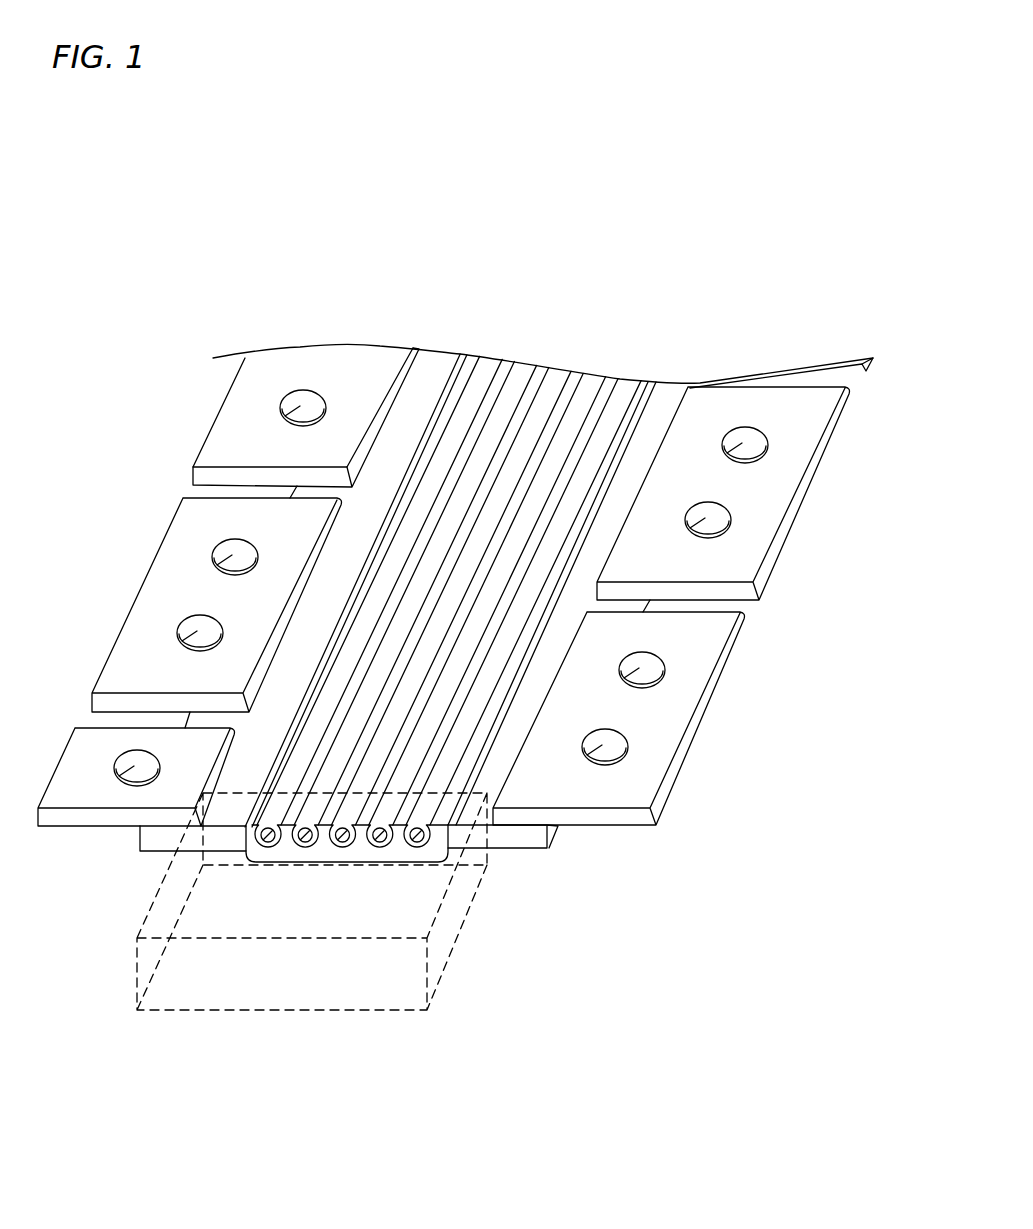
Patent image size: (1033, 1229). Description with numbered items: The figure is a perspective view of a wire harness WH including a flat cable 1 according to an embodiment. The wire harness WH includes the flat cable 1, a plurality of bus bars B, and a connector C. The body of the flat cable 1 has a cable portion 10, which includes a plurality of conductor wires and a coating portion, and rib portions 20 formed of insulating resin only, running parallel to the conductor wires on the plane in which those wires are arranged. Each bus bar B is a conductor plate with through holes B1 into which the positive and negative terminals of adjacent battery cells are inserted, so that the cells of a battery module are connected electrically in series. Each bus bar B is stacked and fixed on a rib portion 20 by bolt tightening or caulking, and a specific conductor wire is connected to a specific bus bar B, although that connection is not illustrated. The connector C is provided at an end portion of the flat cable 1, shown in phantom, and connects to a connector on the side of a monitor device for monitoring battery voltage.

The wire harness WH is at (648, 241).
The flat cable 1 is at (614, 356).
The cable portion 10 is at (508, 392).
The rib portion 20 is at (150, 840).
The bus bar B is at (200, 458).
The through hole B1 is at (283, 411).
The connector C is at (432, 984).